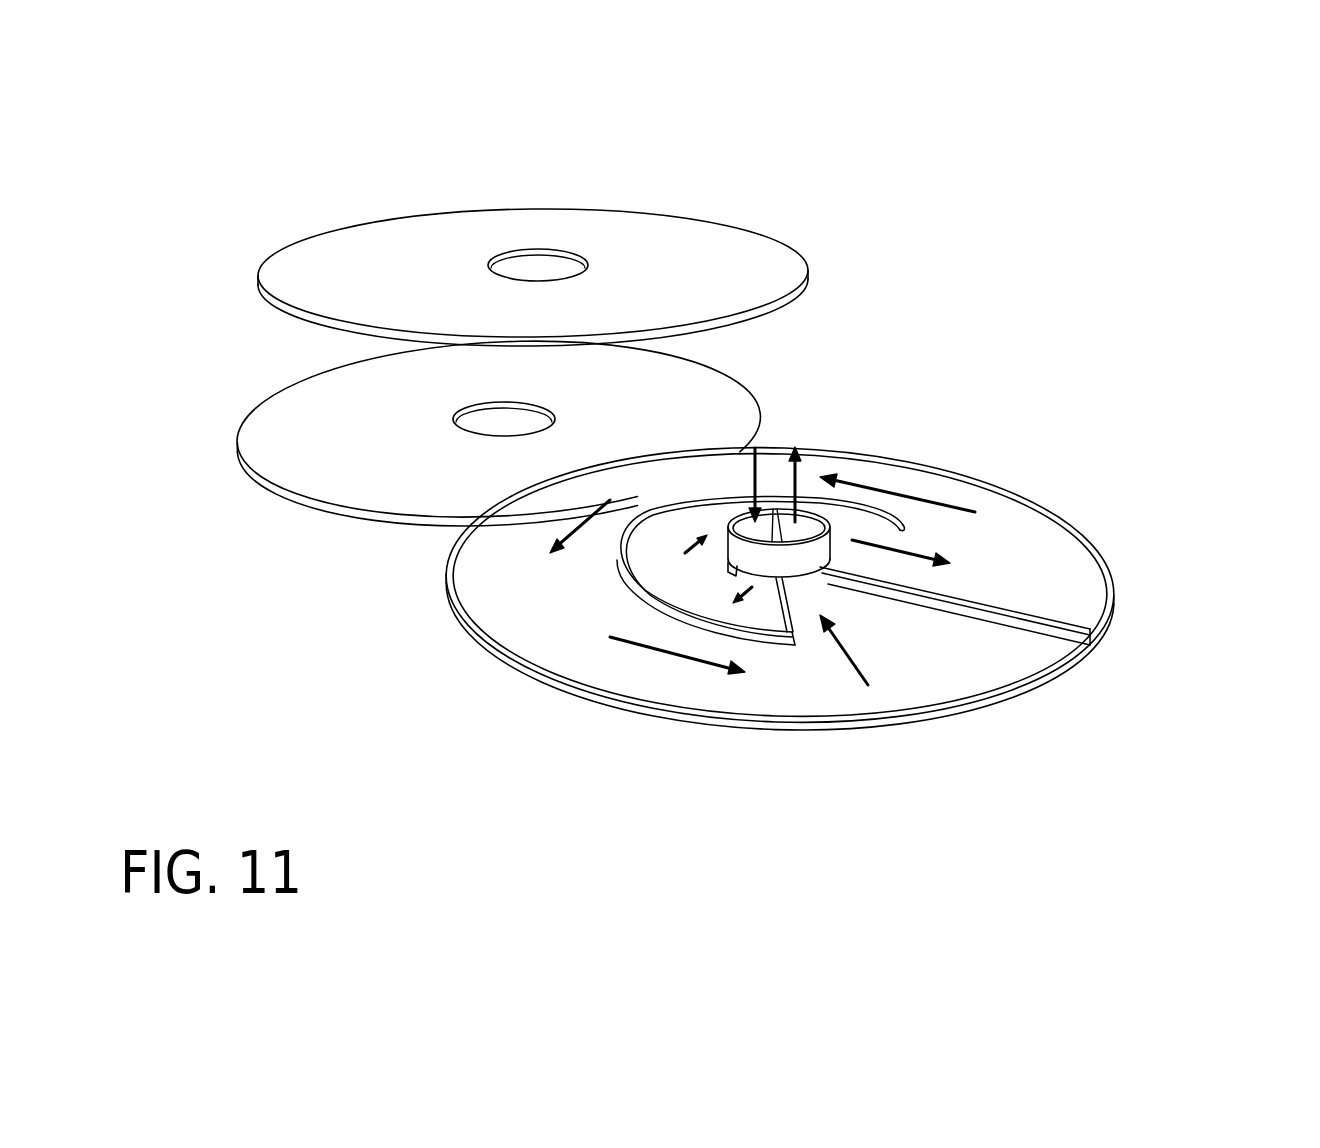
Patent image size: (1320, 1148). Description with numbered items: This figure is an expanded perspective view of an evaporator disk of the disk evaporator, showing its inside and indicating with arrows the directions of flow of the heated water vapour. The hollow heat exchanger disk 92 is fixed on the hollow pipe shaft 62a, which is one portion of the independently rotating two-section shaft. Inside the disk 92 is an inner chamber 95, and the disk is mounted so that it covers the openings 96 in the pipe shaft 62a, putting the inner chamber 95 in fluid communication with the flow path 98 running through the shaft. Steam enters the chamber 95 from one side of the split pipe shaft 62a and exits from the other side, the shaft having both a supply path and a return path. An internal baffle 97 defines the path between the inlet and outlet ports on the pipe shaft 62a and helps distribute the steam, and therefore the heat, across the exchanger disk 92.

The heat exchanger disk 92 is at (643, 260).
The inner chamber 95 is at (947, 675).
The openings 96 is at (853, 544).
The internal baffle 97 is at (617, 582).
The flow path 98 is at (756, 508).
The hollow pipe shaft 62a is at (772, 508).